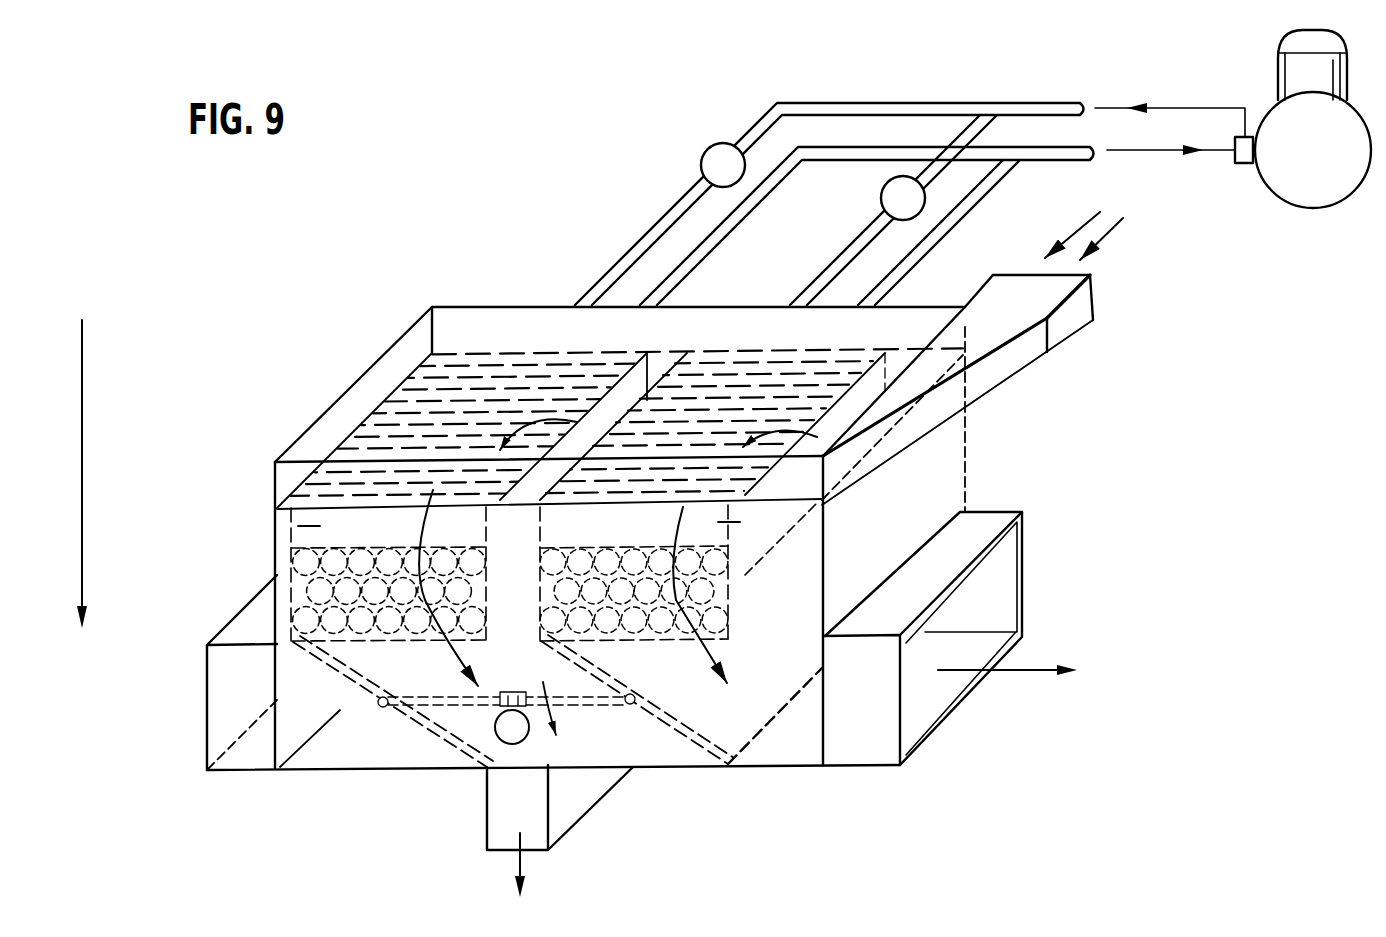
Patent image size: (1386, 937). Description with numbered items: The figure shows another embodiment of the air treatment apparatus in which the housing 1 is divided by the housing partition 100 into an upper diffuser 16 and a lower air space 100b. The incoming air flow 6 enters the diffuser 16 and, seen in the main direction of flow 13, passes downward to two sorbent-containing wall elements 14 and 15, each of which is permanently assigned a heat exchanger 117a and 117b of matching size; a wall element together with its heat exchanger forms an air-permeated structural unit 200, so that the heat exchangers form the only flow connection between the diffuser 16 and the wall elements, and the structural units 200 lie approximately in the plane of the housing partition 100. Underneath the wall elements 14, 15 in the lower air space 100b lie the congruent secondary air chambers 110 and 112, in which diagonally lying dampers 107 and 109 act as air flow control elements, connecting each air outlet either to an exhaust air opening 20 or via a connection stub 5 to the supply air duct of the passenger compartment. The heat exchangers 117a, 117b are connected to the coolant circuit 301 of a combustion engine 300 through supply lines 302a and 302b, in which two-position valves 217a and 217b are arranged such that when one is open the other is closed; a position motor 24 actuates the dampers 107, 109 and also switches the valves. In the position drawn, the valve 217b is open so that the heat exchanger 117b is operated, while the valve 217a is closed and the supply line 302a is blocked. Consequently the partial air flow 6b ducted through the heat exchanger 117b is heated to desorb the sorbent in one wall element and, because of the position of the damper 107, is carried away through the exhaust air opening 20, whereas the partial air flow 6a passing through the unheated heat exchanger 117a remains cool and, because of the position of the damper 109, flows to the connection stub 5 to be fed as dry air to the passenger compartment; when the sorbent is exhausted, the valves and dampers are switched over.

The housing 1 is at (350, 392).
The connection stub 5 is at (583, 798).
The air flow 6 is at (1092, 228).
The partial air flow 6a is at (430, 510).
The partial air flow 6b is at (683, 512).
The main direction of flow 13 is at (83, 455).
The wall element 14 is at (498, 633).
The wall element 15 is at (737, 630).
The diffuser 16 is at (543, 335).
The exhaust air opening 20 is at (212, 690).
The position motor 24 is at (607, 703).
The housing partition 100 is at (795, 500).
The lower air space 100b is at (275, 623).
The damper 107 is at (430, 740).
The damper 109 is at (760, 745).
The secondary air chamber 110 is at (366, 745).
The secondary air chamber 112 is at (668, 742).
The heat exchanger 117a is at (296, 526).
The heat exchanger 117b is at (740, 522).
The air-permeated structural unit 200 is at (268, 553).
The valve 217a is at (700, 165).
The valve 217b is at (881, 198).
The combustion engine 300 is at (1292, 185).
The coolant circuit 301 is at (1292, 68).
The supply line 302a is at (645, 241).
The supply line 302b is at (843, 252).